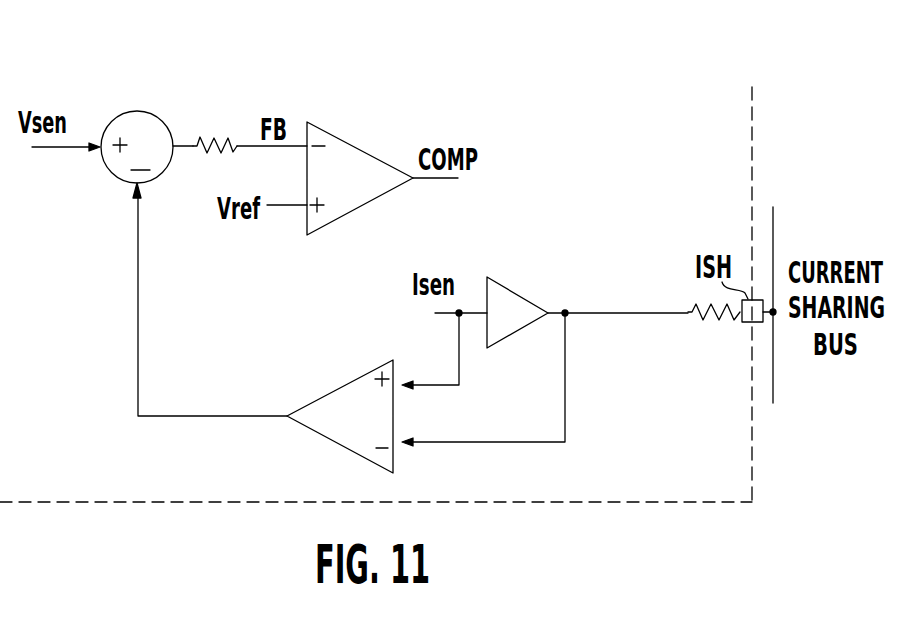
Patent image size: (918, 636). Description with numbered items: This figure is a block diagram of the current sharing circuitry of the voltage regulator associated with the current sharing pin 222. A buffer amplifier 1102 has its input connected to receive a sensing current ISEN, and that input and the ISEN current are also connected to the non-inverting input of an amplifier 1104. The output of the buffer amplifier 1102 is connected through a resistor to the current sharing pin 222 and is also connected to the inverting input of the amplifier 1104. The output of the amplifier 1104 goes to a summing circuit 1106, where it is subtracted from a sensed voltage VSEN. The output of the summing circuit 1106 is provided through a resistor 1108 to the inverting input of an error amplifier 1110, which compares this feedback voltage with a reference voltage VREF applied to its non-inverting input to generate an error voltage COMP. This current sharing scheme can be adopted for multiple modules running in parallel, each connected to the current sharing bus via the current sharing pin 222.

The buffer amplifier 1102 is at (543, 268).
The amplifier 1104 is at (352, 380).
The summing circuit 1106 is at (137, 125).
The resistor 1108 is at (218, 135).
The error amplifier 1110 is at (377, 157).
The current sharing pin 222 is at (739, 322).